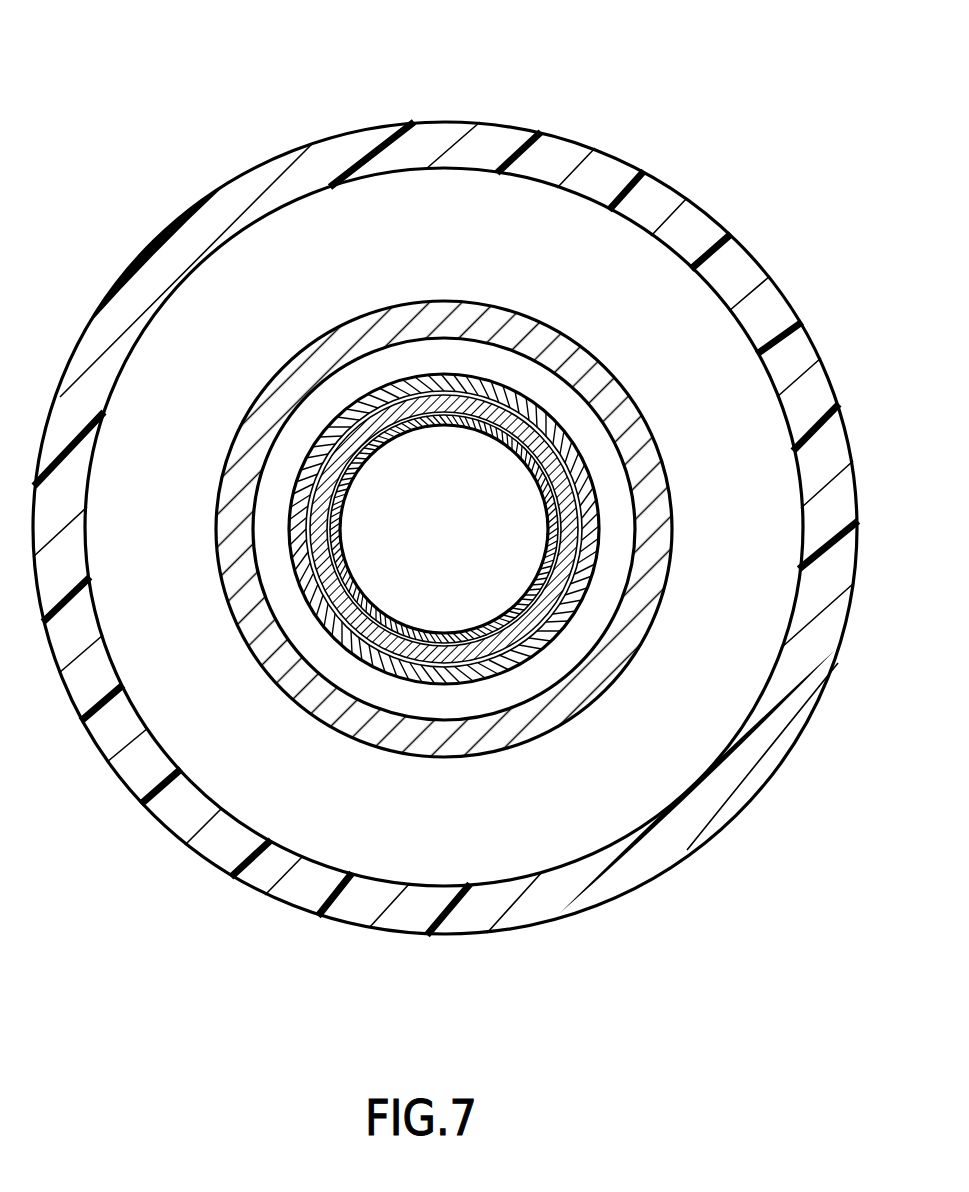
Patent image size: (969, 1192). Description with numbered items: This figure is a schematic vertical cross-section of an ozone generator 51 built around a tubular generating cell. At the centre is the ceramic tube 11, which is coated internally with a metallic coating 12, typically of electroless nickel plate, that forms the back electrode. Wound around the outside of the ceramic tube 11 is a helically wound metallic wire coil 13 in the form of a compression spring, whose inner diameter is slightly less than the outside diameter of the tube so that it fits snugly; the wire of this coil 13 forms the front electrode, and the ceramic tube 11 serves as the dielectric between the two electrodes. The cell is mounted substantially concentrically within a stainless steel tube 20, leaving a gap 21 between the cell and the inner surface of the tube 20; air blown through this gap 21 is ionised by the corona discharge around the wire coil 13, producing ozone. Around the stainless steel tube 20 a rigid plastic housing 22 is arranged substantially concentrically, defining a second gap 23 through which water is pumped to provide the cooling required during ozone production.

The ozone generator 51 is at (750, 195).
The second gap 23 is at (675, 782).
The rigid plastic housing 22 is at (773, 732).
The stainless steel tube 20 is at (640, 618).
The gap 21 is at (540, 678).
The helically wound metallic wire coil 13 is at (448, 385).
The ceramic tube 11 is at (322, 462).
The metallic coating 12 is at (407, 640).